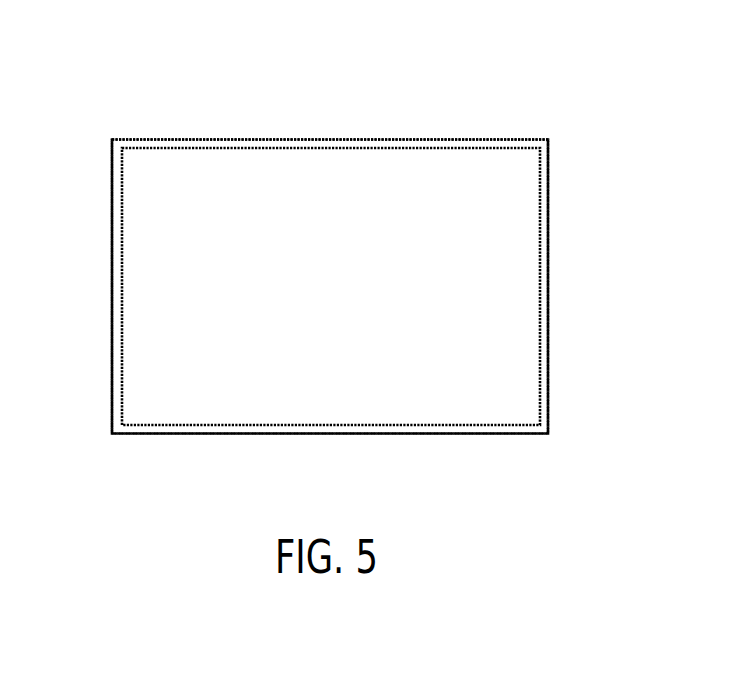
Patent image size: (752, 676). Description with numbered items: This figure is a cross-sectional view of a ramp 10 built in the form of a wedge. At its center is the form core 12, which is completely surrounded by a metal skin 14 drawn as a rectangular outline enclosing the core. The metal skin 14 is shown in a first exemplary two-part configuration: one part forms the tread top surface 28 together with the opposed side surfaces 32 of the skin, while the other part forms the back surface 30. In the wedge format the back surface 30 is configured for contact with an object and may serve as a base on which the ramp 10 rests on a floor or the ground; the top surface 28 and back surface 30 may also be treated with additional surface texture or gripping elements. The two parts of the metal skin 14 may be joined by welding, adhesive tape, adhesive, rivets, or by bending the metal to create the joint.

The ramp 10 is at (474, 64).
The form core 12 is at (336, 305).
The metal skin 14 is at (568, 252).
The top edge 28 is at (295, 139).
The back surface 30 is at (363, 434).
The side edge 32 is at (112, 282).